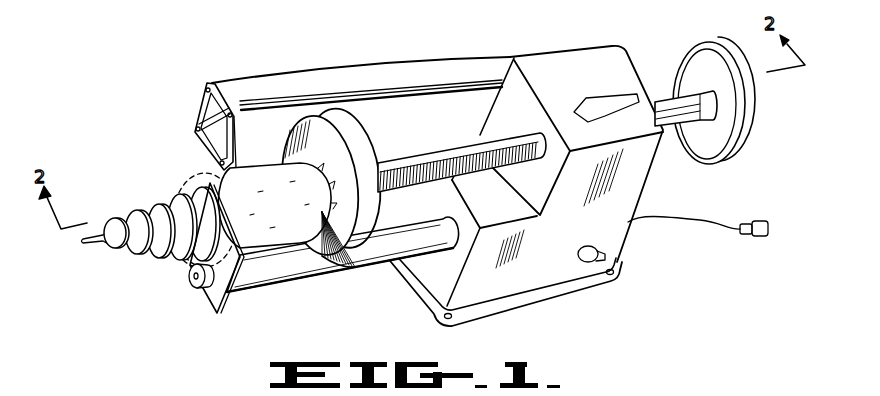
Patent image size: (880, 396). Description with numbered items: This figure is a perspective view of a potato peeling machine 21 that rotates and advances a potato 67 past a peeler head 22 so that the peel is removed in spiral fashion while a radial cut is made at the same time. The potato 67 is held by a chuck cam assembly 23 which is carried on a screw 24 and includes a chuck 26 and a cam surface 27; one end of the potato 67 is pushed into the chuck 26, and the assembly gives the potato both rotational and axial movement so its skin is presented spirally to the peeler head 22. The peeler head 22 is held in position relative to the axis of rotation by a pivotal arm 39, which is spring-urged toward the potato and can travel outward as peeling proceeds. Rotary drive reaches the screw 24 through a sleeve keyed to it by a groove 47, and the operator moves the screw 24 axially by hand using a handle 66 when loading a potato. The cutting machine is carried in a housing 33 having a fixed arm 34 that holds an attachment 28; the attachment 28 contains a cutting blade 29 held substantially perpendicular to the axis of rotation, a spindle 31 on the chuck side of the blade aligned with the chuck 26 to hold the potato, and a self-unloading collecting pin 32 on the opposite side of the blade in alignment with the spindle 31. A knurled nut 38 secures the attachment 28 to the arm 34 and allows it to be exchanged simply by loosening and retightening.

The potato peeling machine 21 is at (633, 43).
The peeler head 22 is at (189, 119).
The chuck cam assembly 23 is at (344, 276).
The screw 24 is at (462, 147).
The chuck 26 is at (321, 214).
The cam surface 27 is at (351, 258).
The attachment 28 is at (204, 314).
The cutting blade 29 is at (183, 261).
The spindle 31 is at (203, 173).
The self-unloading collecting pin 32 is at (97, 232).
The housing 33 is at (628, 180).
The fixed arm 34 is at (258, 291).
The nut 38 is at (190, 282).
The pivotal arm 39 is at (371, 67).
The groove 47 is at (427, 149).
The handle 66 is at (741, 160).
The potato 67 is at (272, 170).